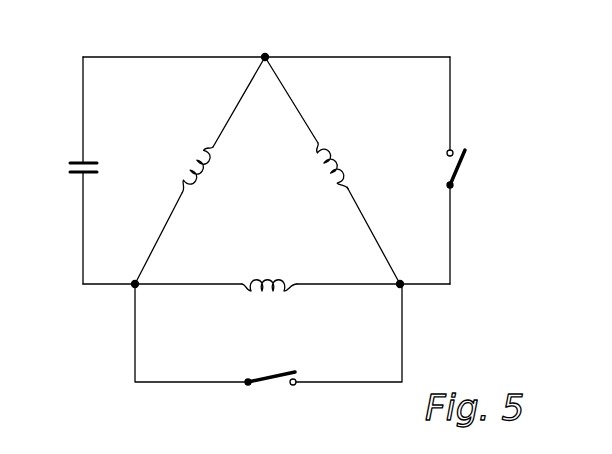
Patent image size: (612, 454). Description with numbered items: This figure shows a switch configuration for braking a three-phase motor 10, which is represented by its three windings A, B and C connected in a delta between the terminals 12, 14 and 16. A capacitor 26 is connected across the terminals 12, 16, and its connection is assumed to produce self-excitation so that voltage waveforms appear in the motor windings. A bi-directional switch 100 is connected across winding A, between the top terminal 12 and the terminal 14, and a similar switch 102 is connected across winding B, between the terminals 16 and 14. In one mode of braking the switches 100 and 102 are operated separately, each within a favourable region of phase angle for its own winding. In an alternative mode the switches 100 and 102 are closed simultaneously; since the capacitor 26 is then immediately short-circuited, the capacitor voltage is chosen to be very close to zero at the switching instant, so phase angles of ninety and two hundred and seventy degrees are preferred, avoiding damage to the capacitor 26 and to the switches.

The three-phase motor 10 is at (118, 305).
The terminal 12 is at (265, 57).
The terminal 14 is at (400, 284).
The terminal 16 is at (135, 282).
The capacitor 26 is at (90, 161).
The bi-directional switch 100 is at (461, 167).
The switch 102 is at (279, 375).